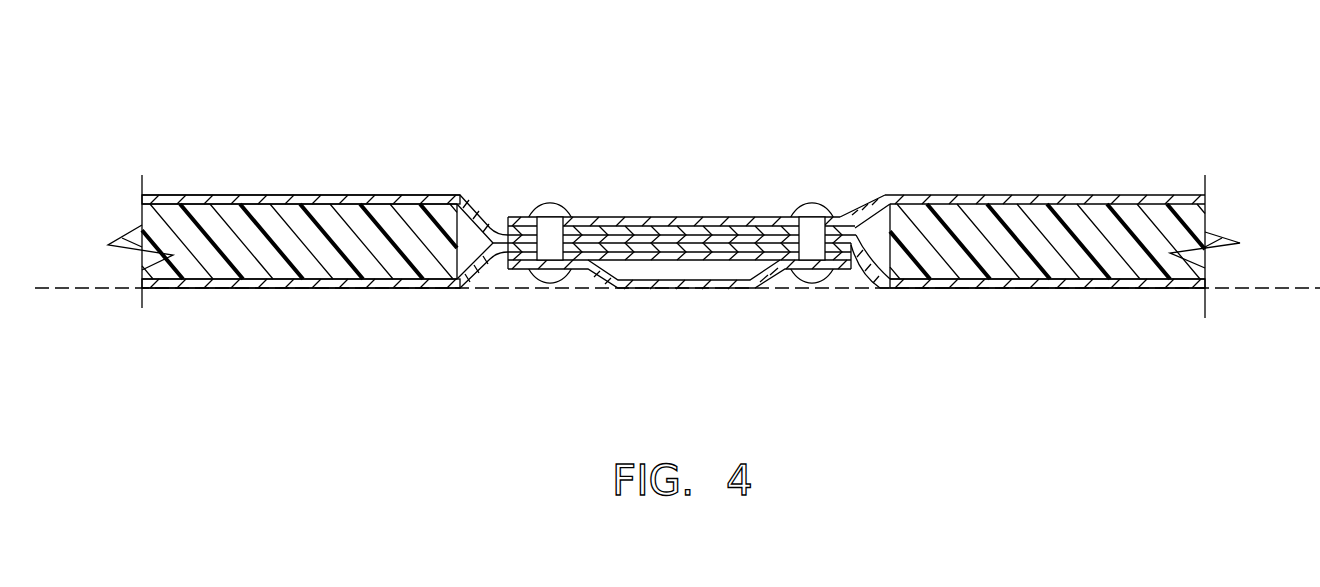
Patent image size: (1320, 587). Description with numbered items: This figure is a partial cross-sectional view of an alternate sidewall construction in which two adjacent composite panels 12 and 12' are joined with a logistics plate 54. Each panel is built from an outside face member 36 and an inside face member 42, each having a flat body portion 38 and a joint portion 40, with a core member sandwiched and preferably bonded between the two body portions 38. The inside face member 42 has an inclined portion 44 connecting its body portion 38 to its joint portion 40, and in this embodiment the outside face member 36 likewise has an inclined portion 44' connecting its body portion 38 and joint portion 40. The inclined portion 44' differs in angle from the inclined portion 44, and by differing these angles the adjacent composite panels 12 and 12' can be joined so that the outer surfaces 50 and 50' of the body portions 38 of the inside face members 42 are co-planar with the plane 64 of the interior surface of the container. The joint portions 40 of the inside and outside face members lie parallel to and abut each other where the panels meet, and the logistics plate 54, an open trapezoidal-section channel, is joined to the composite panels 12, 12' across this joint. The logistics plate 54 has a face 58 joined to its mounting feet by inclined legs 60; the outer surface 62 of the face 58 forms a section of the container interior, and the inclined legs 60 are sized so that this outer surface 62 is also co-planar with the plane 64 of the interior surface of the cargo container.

The composite panel 12 is at (284, 173).
The adjacent composite panel 12' is at (1060, 179).
The outside face member 36 is at (182, 195).
The body portion 38 is at (232, 195).
The joint portion 40 is at (612, 217).
The inside face member 42 is at (202, 290).
The inclined portion 44 is at (673, 240).
The inclined portion 44' is at (683, 240).
The outer surface 50 is at (301, 342).
The outer surface 50' is at (1047, 329).
The logistics plate 54 is at (845, 284).
The face 58 is at (686, 290).
The inclined legs 60 is at (583, 284).
The outer surface 62 is at (630, 290).
The plane 64 is at (1270, 290).